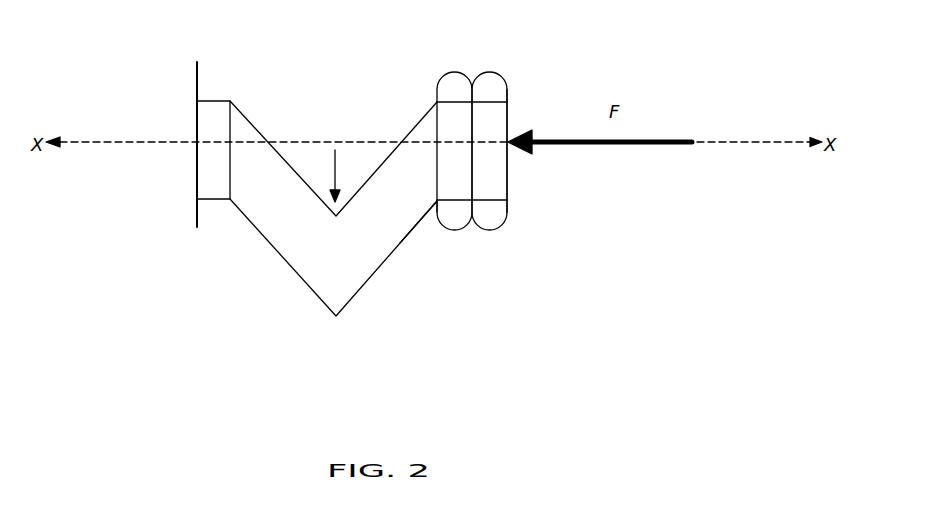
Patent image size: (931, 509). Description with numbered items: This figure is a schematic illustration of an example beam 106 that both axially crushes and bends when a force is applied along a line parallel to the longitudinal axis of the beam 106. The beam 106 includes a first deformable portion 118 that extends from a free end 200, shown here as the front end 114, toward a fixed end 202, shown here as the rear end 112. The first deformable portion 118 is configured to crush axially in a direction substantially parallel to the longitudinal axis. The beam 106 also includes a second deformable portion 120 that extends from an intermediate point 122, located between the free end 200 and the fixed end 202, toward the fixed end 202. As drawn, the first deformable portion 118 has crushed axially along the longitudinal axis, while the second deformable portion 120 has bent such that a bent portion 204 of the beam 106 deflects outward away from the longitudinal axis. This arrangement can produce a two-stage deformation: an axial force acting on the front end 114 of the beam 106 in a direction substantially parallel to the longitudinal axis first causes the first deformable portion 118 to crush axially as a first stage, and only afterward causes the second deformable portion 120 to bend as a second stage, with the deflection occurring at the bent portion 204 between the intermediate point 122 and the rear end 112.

The rear end 112 is at (197, 120).
The fixed end 202 is at (210, 101).
The beam 106 is at (240, 130).
The bent portion 204 is at (302, 262).
The second deformable portion 120 is at (363, 182).
The intermediate point 122 is at (433, 207).
The first deformable portion 118 is at (472, 83).
The free end 200 is at (508, 95).
The front end 114 is at (508, 192).